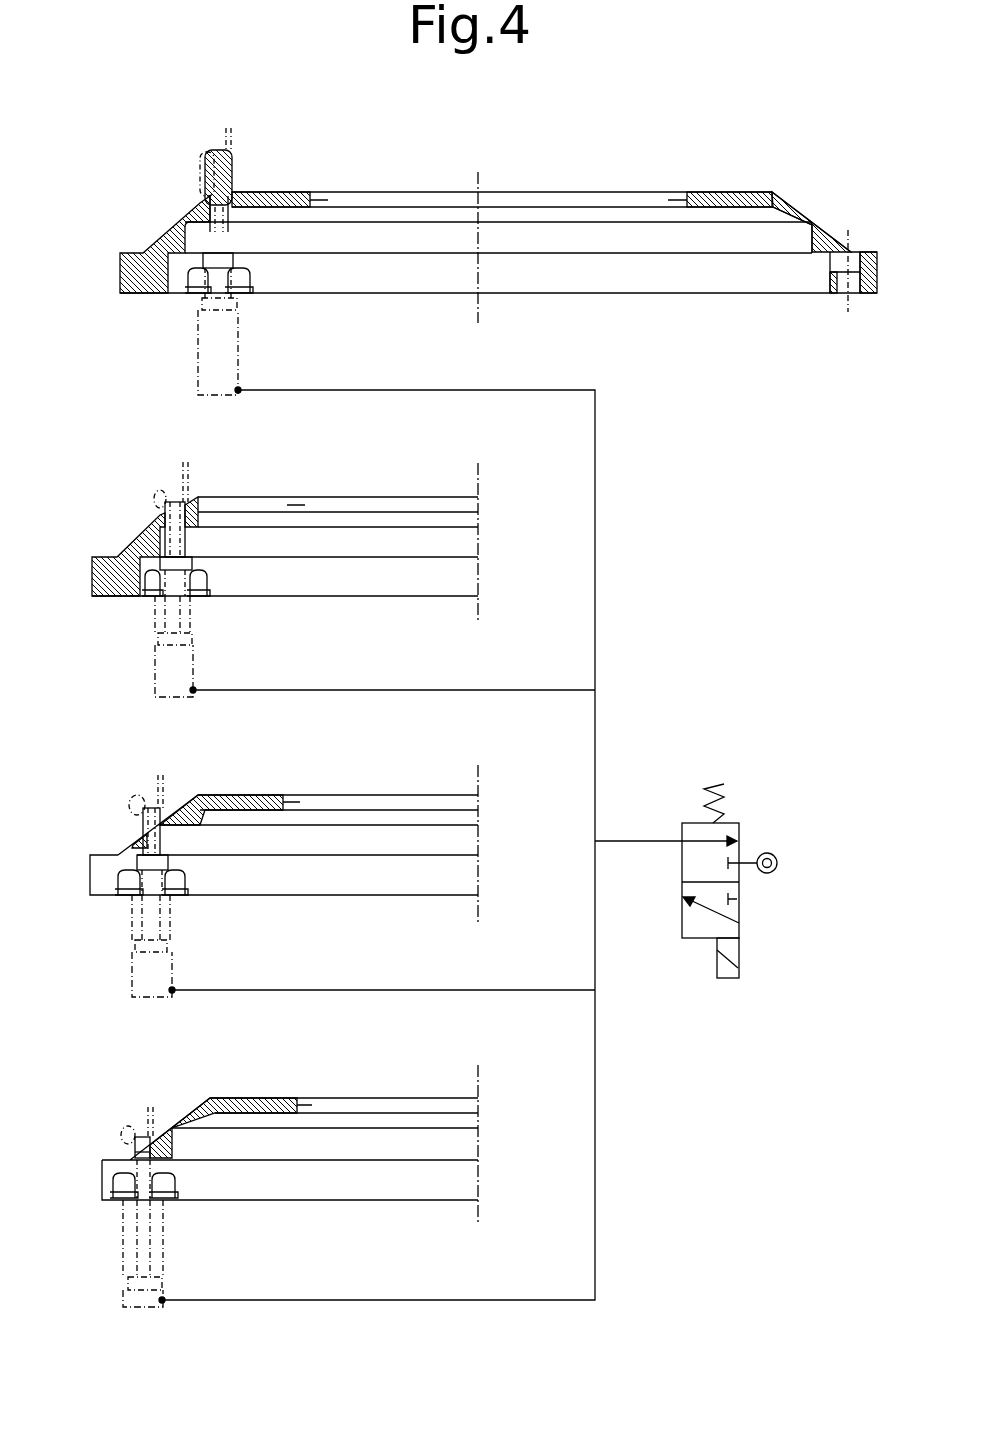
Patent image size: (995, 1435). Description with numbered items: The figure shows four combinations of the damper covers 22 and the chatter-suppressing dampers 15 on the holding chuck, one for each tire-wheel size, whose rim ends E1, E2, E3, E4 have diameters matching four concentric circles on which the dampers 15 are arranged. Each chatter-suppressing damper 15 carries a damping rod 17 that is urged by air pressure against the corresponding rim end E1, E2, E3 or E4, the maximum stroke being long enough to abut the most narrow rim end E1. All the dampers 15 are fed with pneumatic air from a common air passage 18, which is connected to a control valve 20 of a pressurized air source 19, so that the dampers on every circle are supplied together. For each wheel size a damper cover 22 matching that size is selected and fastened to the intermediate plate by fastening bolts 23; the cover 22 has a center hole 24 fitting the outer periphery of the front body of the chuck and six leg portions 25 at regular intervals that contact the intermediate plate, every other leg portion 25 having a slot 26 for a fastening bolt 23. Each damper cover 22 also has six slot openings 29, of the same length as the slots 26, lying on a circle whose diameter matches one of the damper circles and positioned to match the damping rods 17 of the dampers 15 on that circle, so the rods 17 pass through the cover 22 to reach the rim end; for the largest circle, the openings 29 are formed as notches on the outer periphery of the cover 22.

The chatter-suppressing damper 15 is at (238, 340).
The damping rod 17 is at (215, 148).
The air passage 18 is at (596, 560).
The pressurized air source 19 is at (778, 858).
The control valve 20 is at (695, 940).
The damper cover 22 is at (397, 190).
The fastening bolt 23 is at (848, 230).
The center hole 24 is at (683, 190).
The leg portion 25 is at (862, 296).
The slot 26 is at (836, 296).
The slot opening 29 is at (232, 186).
The rim end E1 is at (203, 187).
The rim end E2 is at (160, 508).
The rim end E3 is at (132, 805).
The rim end E4 is at (125, 1140).